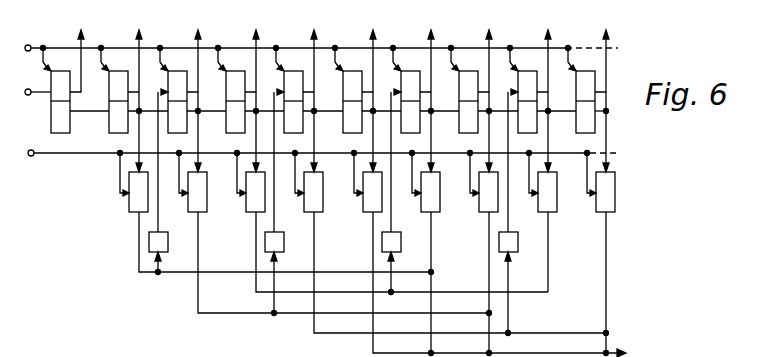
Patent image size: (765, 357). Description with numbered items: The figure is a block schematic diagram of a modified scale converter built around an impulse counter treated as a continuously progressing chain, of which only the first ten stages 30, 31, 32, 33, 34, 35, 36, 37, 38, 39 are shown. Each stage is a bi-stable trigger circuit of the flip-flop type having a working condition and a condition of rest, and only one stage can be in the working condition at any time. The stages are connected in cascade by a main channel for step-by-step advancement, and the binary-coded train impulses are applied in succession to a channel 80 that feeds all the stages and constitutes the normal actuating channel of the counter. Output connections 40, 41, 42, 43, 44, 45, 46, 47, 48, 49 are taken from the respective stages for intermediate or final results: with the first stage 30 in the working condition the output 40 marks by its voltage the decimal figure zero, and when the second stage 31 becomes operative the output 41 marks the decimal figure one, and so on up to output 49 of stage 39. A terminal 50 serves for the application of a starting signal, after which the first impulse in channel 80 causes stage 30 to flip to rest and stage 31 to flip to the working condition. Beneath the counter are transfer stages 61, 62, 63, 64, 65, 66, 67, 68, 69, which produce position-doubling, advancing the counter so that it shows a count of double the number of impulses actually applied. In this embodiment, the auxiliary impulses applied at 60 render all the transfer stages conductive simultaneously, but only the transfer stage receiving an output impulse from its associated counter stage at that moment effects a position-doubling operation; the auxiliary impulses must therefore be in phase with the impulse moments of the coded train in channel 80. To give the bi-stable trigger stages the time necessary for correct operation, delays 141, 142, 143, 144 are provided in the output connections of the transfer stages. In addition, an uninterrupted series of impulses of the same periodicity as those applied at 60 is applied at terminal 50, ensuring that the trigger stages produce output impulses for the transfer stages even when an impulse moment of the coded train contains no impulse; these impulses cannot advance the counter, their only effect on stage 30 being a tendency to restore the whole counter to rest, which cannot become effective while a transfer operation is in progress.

The counter stage 30 is at (56, 90).
The counter stage 31 is at (114, 90).
The counter stage 32 is at (173, 90).
The counter stage 33 is at (231, 90).
The counter stage 34 is at (289, 90).
The counter stage 35 is at (348, 90).
The counter stage 36 is at (406, 90).
The counter stage 37 is at (464, 90).
The counter stage 38 is at (523, 90).
The counter stage 39 is at (581, 90).
The output connection 40 is at (79, 53).
The output connection 41 is at (137, 53).
The output connection 42 is at (196, 53).
The output connection 43 is at (254, 53).
The output connection 44 is at (312, 53).
The output connection 45 is at (371, 53).
The output connection 46 is at (429, 53).
The output connection 47 is at (487, 53).
The output connection 48 is at (546, 53).
The output connection 49 is at (604, 53).
The terminal 50 is at (34, 100).
The auxiliary impulse input 60 is at (317, 161).
The channel 80 is at (318, 40).
The transfer stage 61 is at (271, 183).
The transfer stage 62 is at (329, 204).
The transfer stage 63 is at (386, 193).
The transfer stage 64 is at (446, 214).
The transfer stage 65 is at (484, 224).
The transfer stage 66 is at (420, 222).
The transfer stage 67 is at (478, 222).
The transfer stage 68 is at (537, 192).
The transfer stage 69 is at (595, 222).
The delay 141 is at (171, 180).
The delay 142 is at (287, 201).
The delay 143 is at (404, 190).
The delay 144 is at (521, 211).